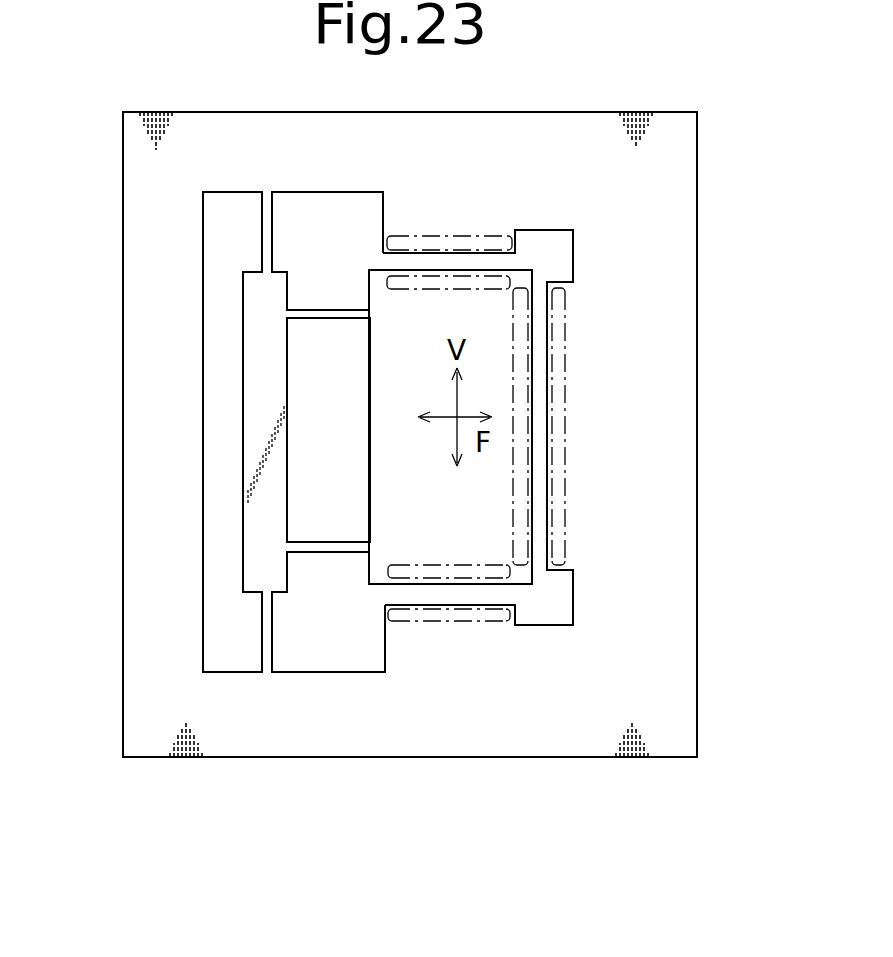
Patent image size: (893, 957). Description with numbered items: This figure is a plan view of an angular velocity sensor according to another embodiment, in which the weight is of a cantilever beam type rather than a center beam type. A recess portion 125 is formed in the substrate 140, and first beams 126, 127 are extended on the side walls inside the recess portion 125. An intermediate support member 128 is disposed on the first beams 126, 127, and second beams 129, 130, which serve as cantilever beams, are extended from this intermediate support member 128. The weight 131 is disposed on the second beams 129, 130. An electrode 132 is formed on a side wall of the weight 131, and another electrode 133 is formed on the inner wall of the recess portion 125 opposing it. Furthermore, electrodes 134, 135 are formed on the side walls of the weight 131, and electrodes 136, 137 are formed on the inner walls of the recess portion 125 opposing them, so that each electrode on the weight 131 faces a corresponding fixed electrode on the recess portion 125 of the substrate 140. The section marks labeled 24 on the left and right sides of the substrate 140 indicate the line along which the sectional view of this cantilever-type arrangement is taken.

The section line 24- 24 is at (118, 512).
The recess portion 125 is at (334, 668).
The first beam 126 is at (272, 239).
The first beam 127 is at (272, 634).
The intermediate support member 128 is at (287, 452).
The second beam 129 is at (312, 320).
The second beam 130 is at (328, 556).
The weight 131 is at (370, 413).
The electrode 132 is at (513, 497).
The electrode 133 is at (565, 466).
The electrode 134 is at (446, 290).
The electrode 135 is at (404, 564).
The electrode 136 is at (460, 233).
The electrode 137 is at (445, 623).
The substrate 140 is at (697, 677).